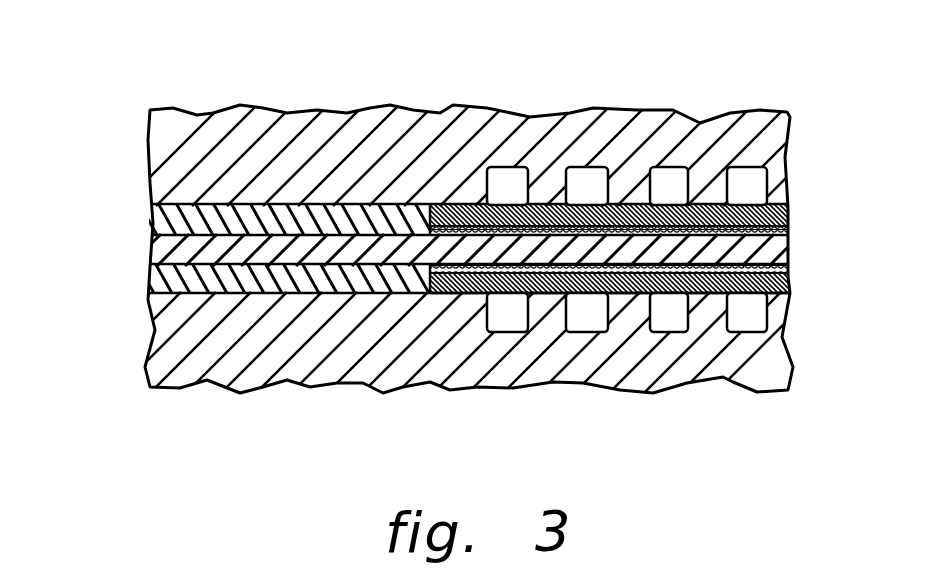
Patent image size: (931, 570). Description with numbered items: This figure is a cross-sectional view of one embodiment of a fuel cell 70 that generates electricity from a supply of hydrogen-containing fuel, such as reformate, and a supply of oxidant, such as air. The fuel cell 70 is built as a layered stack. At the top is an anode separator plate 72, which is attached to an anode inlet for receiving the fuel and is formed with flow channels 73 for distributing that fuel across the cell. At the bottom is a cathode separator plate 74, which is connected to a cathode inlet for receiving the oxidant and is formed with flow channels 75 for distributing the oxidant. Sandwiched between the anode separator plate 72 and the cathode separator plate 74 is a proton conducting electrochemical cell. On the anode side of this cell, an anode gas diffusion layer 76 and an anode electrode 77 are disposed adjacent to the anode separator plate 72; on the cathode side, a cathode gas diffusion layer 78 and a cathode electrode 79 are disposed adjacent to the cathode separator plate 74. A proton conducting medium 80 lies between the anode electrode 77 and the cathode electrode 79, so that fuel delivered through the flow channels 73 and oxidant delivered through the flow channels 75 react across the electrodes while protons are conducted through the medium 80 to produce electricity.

The fuel cell 70 is at (467, 254).
The anode separator plate 72 is at (638, 142).
The flow channels 73 is at (583, 153).
The cathode separator plate 74 is at (637, 345).
The flow channels 75 is at (583, 352).
The anode gas diffusion layer 76 is at (525, 210).
The anode electrode 77 is at (790, 233).
The cathode gas diffusion layer 78 is at (790, 294).
The cathode electrode 79 is at (790, 273).
The proton conducting medium 80 is at (790, 250).